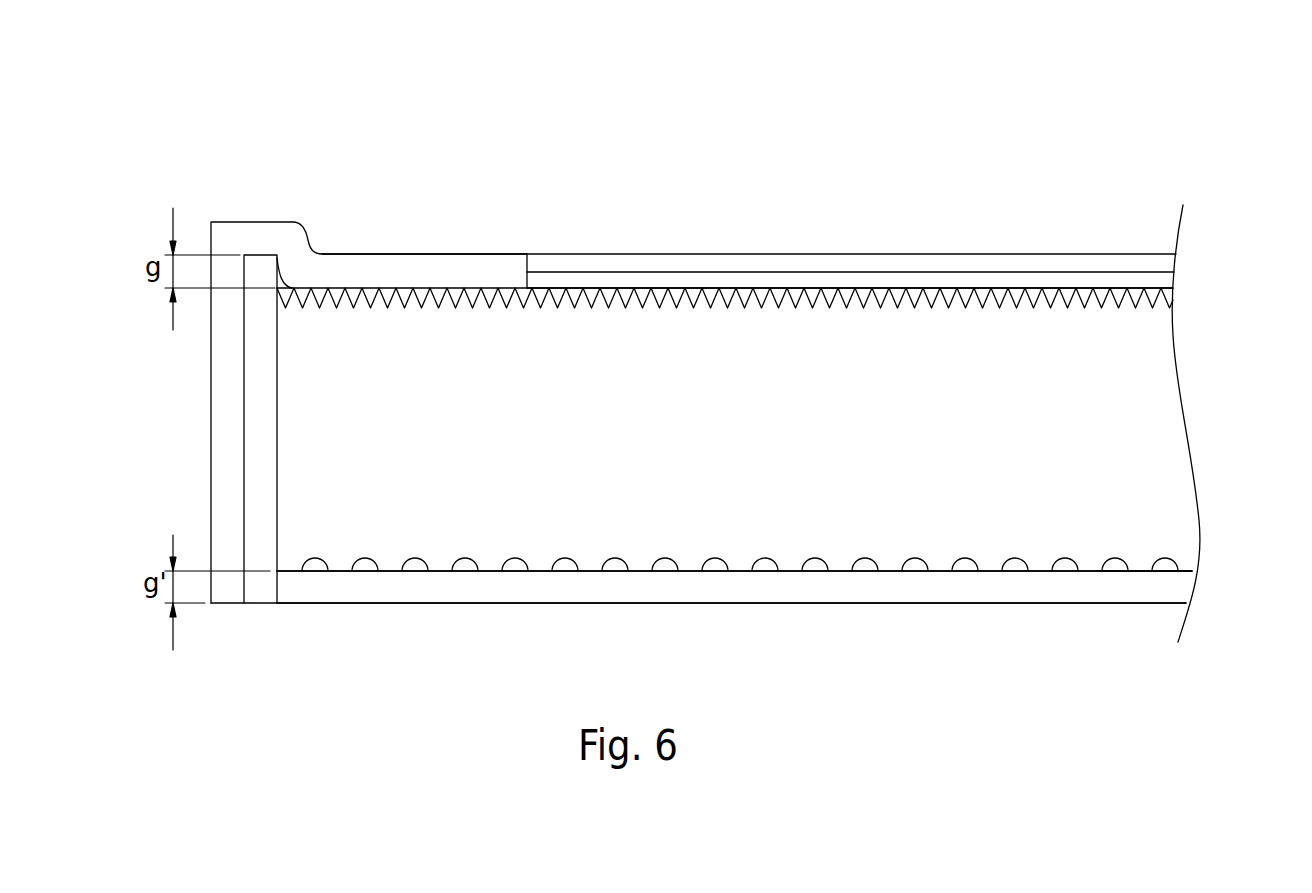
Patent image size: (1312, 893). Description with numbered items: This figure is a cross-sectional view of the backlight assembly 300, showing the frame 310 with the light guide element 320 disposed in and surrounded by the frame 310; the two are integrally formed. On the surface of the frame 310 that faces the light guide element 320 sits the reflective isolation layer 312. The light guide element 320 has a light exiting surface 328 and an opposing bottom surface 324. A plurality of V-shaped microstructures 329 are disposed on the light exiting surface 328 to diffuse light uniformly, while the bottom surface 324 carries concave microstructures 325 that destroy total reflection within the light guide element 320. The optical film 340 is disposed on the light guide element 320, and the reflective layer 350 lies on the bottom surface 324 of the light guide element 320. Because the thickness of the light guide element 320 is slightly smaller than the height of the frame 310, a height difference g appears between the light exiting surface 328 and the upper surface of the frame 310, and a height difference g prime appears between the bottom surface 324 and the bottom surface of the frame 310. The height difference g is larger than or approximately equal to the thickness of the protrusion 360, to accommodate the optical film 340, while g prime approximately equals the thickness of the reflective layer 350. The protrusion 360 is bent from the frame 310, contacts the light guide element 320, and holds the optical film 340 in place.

The backlight unit 300 is at (503, 147).
The frame 310 is at (222, 415).
The reflective isolation layer 312 is at (262, 590).
The light guide element 320 is at (489, 530).
The bottom surface 324 is at (1184, 568).
The concave microstructures 325 is at (911, 567).
The light exiting surface 328 is at (1160, 302).
The V-shaped microstructures 329 is at (981, 292).
The optical film 340 is at (853, 253).
The reflective layer 350 is at (731, 587).
The protrusion 360 is at (467, 268).